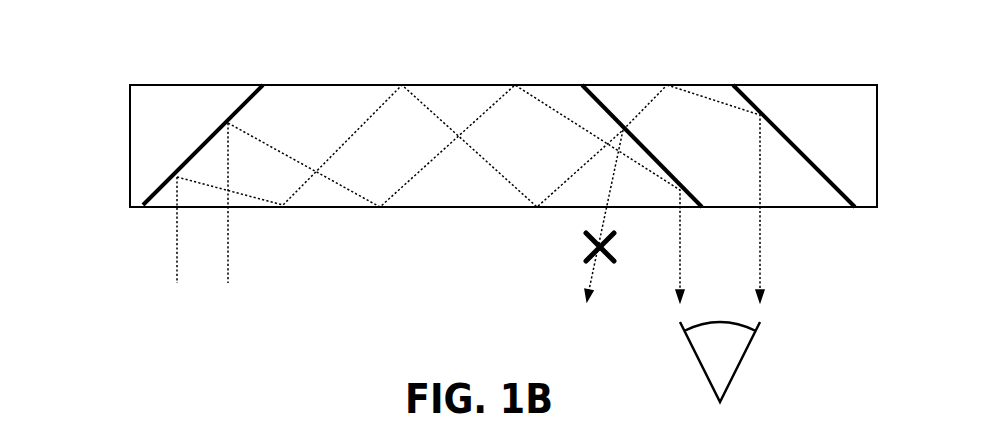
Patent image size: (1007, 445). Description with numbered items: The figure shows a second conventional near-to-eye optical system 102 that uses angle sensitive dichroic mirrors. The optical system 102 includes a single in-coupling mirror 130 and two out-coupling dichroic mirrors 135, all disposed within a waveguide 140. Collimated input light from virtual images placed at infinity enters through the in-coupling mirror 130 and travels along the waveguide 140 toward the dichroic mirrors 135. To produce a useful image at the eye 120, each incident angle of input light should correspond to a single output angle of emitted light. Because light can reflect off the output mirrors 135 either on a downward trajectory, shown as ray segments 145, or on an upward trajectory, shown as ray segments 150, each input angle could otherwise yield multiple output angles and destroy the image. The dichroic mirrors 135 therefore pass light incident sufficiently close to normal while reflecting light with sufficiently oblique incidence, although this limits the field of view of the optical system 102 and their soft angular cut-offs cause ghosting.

The near-to-eye optical system 102 is at (287, 310).
The eye 120 is at (737, 365).
The in-coupling mirror 130 is at (200, 143).
The out-coupling dichroic mirror 135 is at (610, 107).
The waveguide 140 is at (317, 84).
The ray segments 145 is at (538, 92).
The ray segments 150 is at (582, 170).